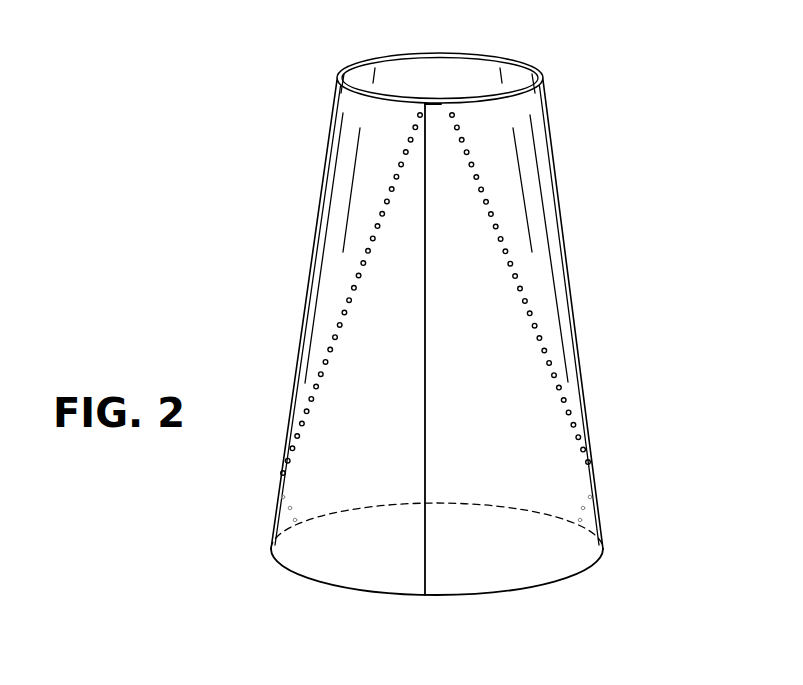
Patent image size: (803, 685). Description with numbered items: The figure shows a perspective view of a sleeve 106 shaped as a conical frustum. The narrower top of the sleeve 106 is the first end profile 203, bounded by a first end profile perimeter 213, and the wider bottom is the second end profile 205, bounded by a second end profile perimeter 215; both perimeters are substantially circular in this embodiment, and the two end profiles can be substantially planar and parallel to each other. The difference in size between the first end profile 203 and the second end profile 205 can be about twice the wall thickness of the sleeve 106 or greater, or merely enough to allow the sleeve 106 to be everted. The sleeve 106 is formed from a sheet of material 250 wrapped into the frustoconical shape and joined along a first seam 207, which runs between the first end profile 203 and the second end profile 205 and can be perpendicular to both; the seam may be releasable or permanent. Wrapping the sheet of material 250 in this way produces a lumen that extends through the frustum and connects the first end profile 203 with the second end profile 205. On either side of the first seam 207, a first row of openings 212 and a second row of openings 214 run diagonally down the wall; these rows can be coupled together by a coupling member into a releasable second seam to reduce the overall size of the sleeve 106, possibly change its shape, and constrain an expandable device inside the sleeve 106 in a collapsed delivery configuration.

The sleeve 106 is at (593, 81).
The first end profile 203 is at (437, 78).
The second end profile 205 is at (408, 605).
The first seam 207 is at (425, 418).
The first row of openings 212 is at (540, 343).
The first end profile perimeter 213 is at (347, 64).
The second row of openings 214 is at (372, 255).
The second end profile perimeter 215 is at (348, 592).
The sheet of material 250 is at (540, 248).